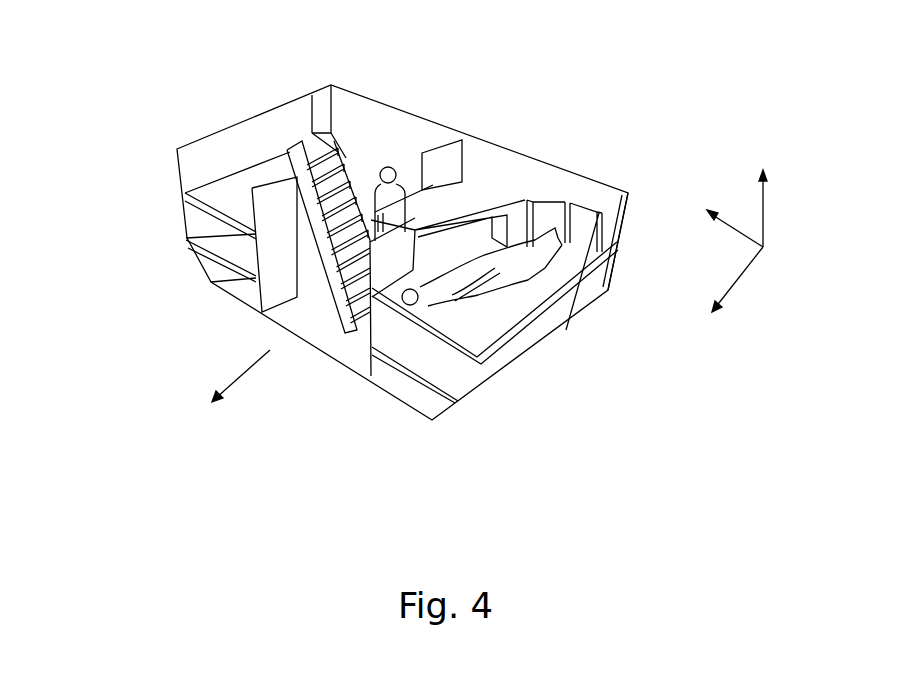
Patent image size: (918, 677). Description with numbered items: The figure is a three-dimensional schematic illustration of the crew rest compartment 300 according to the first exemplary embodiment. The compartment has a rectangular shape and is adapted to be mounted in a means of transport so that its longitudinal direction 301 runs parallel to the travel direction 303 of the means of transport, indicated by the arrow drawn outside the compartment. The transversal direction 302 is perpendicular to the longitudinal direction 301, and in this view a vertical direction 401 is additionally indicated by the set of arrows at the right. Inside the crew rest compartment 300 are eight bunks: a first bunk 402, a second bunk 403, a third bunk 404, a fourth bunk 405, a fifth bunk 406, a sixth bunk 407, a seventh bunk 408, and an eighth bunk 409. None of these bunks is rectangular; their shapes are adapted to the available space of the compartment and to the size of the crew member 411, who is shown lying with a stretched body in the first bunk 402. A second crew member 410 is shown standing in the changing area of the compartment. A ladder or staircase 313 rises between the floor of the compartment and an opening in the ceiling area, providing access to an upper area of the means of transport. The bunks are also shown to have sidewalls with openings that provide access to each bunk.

The crew rest compartment 300 is at (560, 126).
The longitudinal direction of the crew rest compartment 301 is at (747, 275).
The transversal direction of the crew rest compartment 302 is at (737, 222).
The travel direction 303 is at (250, 375).
The ladder or staircase 313 is at (339, 256).
The vertical direction of the crew rest compartment 401 is at (765, 205).
The first bunk 402 is at (515, 311).
The second bunk 403 is at (497, 352).
The third bunk 404 is at (609, 245).
The fourth bunk 405 is at (604, 293).
The fifth bunk 406 is at (372, 165).
The sixth bunk 407 is at (354, 162).
The seventh bunk 408 is at (227, 190).
The eighth bunk 409 is at (227, 247).
The second crew member 410 is at (460, 137).
The crew member 411 is at (442, 290).